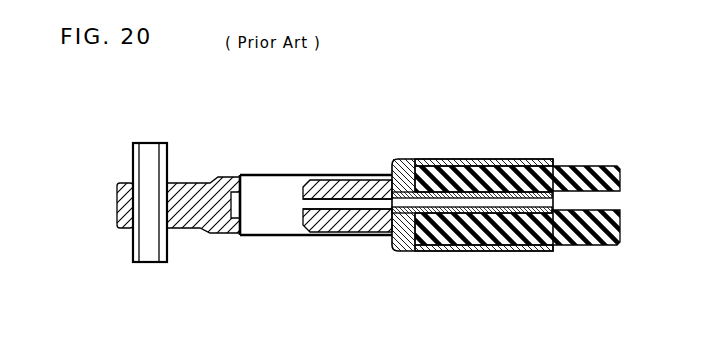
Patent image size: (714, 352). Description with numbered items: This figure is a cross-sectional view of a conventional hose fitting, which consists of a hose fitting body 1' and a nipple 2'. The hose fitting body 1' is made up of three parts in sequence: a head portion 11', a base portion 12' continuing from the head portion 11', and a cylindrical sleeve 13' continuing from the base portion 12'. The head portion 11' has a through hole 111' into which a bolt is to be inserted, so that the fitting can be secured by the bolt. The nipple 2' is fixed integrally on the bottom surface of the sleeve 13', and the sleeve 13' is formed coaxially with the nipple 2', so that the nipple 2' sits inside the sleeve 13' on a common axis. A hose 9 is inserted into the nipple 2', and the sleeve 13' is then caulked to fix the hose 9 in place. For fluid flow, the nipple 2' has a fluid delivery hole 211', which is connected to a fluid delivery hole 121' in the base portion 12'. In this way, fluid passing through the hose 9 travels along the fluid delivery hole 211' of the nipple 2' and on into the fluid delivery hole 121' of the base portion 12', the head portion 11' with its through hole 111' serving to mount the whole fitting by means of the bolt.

The hose fitting body 1' is at (225, 185).
The head portion 11' is at (301, 165).
The through hole 111' is at (261, 243).
The base portion 12' is at (357, 257).
The fluid delivery hole 121' is at (347, 263).
The cylindrical sleeve 13' is at (472, 167).
The nipple 2' is at (517, 239).
The fluid delivery hole 211' is at (472, 252).
The hose 9 is at (578, 243).